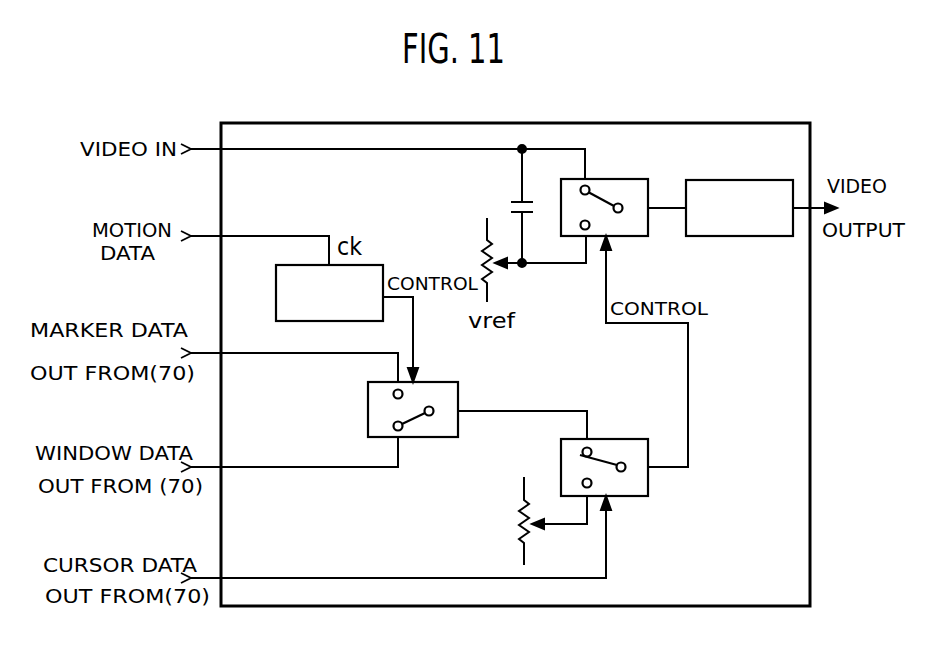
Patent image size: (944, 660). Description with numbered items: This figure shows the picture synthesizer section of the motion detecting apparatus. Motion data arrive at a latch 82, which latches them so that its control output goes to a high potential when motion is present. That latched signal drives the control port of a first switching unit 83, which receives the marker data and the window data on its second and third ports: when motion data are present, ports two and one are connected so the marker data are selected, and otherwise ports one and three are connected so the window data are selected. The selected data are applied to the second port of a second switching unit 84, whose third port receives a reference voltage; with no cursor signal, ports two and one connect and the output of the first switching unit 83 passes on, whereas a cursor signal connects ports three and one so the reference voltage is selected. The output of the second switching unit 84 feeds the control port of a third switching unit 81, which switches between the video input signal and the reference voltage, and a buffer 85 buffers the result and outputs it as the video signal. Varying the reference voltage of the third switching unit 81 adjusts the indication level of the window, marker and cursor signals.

The third switching unit 81 is at (620, 179).
The latch 82 is at (276, 321).
The first switching unit 83 is at (442, 382).
The second switching unit 84 is at (610, 439).
The buffer 85 is at (731, 180).